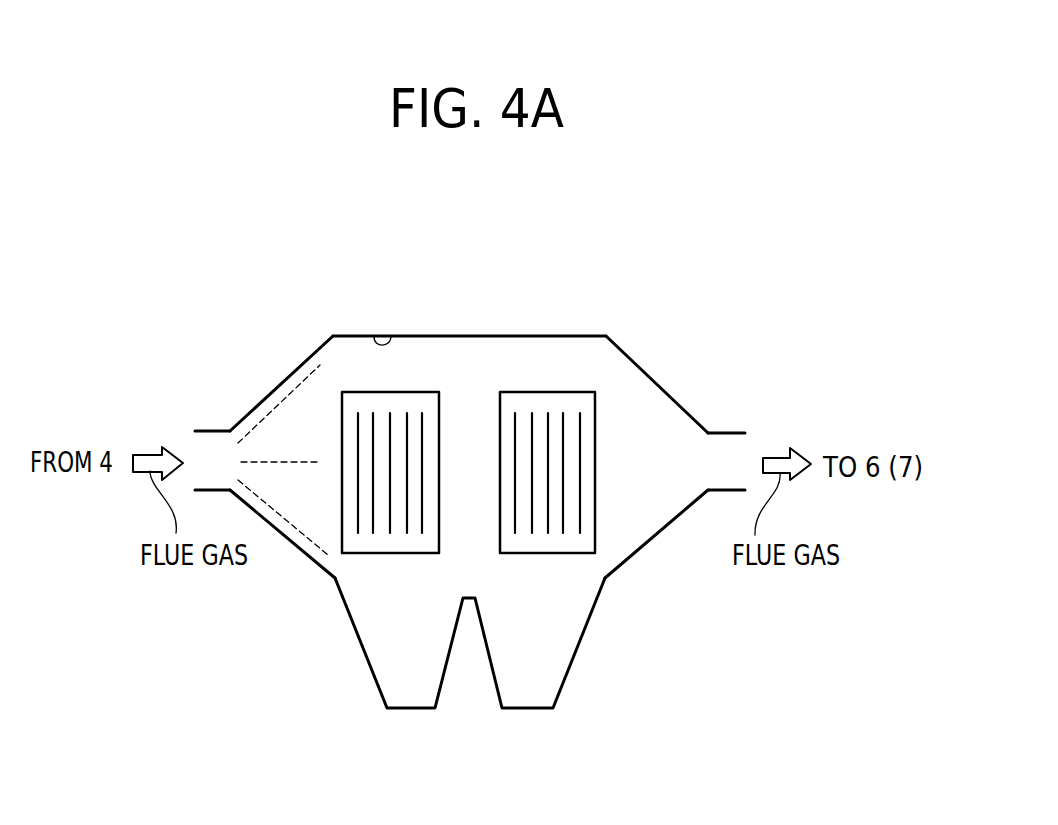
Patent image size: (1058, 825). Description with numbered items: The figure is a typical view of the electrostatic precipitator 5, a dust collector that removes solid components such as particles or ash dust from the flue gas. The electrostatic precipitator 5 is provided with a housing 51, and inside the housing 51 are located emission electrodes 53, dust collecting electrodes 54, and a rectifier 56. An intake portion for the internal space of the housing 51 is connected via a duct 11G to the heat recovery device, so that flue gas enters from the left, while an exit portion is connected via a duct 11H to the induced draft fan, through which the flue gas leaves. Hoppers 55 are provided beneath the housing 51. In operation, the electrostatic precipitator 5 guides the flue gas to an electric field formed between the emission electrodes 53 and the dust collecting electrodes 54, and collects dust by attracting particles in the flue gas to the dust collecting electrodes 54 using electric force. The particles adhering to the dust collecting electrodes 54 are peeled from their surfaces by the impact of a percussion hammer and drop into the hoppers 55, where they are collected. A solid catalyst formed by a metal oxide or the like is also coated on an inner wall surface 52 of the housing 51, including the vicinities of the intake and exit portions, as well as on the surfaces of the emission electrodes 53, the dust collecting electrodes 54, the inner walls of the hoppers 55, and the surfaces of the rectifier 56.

The electrostatic precipitator 5 is at (622, 351).
The duct 11G is at (220, 431).
The duct 11H is at (727, 433).
The housing 51 is at (493, 336).
The inner wall surface 52 is at (391, 336).
The emission electrodes 53 is at (373, 458).
The dust collecting electrodes 54 is at (392, 392).
The hoppers 55 is at (448, 657).
The rectifier 56 is at (285, 518).